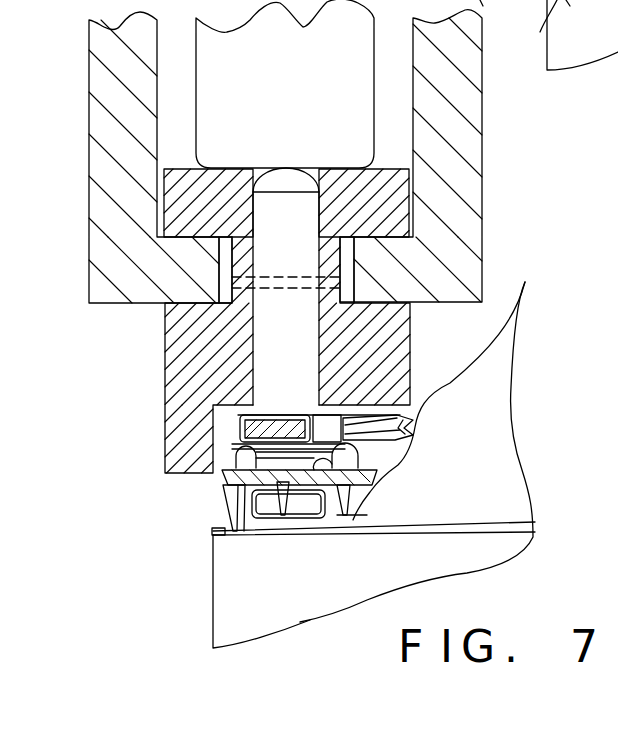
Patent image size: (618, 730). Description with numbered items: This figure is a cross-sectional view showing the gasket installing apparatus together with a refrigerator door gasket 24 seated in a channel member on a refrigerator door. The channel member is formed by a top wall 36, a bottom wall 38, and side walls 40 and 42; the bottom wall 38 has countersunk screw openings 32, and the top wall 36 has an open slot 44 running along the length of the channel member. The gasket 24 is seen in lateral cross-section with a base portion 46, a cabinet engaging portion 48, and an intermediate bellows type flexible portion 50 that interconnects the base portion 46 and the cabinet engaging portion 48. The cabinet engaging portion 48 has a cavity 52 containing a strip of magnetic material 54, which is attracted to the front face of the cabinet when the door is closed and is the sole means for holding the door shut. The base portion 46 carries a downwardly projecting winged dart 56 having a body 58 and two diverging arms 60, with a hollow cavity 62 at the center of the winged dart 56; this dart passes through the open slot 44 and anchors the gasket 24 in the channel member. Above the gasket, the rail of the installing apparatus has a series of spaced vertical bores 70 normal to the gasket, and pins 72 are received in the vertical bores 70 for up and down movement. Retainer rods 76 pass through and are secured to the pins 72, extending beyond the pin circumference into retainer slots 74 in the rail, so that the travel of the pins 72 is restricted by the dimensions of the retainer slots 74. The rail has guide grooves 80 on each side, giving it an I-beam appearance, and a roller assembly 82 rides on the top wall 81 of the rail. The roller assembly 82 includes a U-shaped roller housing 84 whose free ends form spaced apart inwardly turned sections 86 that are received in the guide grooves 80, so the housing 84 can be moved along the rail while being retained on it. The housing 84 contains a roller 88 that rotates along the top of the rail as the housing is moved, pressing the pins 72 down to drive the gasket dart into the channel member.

The gasket 24 is at (207, 511).
The screw openings 32 is at (304, 535).
The top wall 36 is at (337, 529).
The bottom wall 38 is at (262, 500).
The side wall 40 is at (330, 518).
The side wall 42 is at (245, 492).
The open slot 44 is at (217, 537).
The base portion 46 is at (205, 489).
The cabinet engaging portion 48 is at (225, 432).
The bellows type flexible portion 50 is at (222, 460).
The cavity 52 is at (226, 408).
The strip of magnetic material 54 is at (296, 410).
The winged dart 56 is at (357, 502).
The body 58 is at (233, 512).
The diverging arms 60 is at (343, 522).
The hollow cavity 62 is at (405, 463).
The vertical bores 70 is at (308, 169).
The pins 72 is at (308, 258).
The retainer slots 74 is at (233, 261).
The retainer rods 76 is at (335, 283).
The guide grooves 80 is at (192, 277).
The top wall 81 is at (176, 171).
The roller assembly 82 is at (86, 72).
The roller housing 84 is at (492, 186).
The inwardly turned sections 86 is at (192, 288).
The roller 88 is at (308, 80).